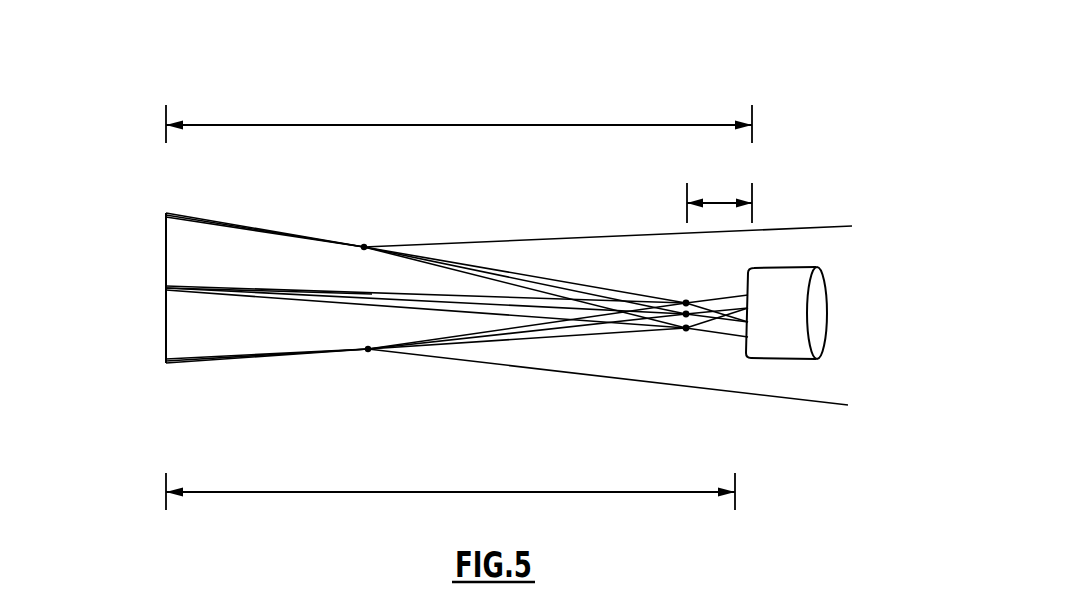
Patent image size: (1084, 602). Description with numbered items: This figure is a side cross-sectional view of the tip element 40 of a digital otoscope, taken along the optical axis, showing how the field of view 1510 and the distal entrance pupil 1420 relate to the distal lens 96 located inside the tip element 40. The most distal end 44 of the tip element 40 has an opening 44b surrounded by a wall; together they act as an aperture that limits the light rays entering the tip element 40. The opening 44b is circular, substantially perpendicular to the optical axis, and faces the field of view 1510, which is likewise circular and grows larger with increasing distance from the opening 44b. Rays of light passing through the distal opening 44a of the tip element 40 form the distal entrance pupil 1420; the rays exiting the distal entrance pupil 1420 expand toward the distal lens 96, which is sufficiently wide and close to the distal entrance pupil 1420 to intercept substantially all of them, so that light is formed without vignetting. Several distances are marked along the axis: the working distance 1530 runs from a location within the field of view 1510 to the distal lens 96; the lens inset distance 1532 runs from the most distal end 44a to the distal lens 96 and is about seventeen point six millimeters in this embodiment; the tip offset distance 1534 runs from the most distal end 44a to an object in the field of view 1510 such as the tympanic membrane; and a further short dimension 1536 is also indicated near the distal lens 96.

The field of view 1510 is at (156, 260).
The most distal end 44 is at (331, 372).
The most distal end 44a is at (363, 234).
The opening 44b is at (362, 282).
The distal entrance pupil 1420 is at (678, 286).
The tip element 40 is at (641, 235).
The distal lens 96 is at (797, 322).
The tip offset distance 1534 is at (239, 124).
The lens inset distance 1532 is at (559, 124).
The eye relief distance 1536 is at (716, 202).
The working distance 1530 is at (402, 491).